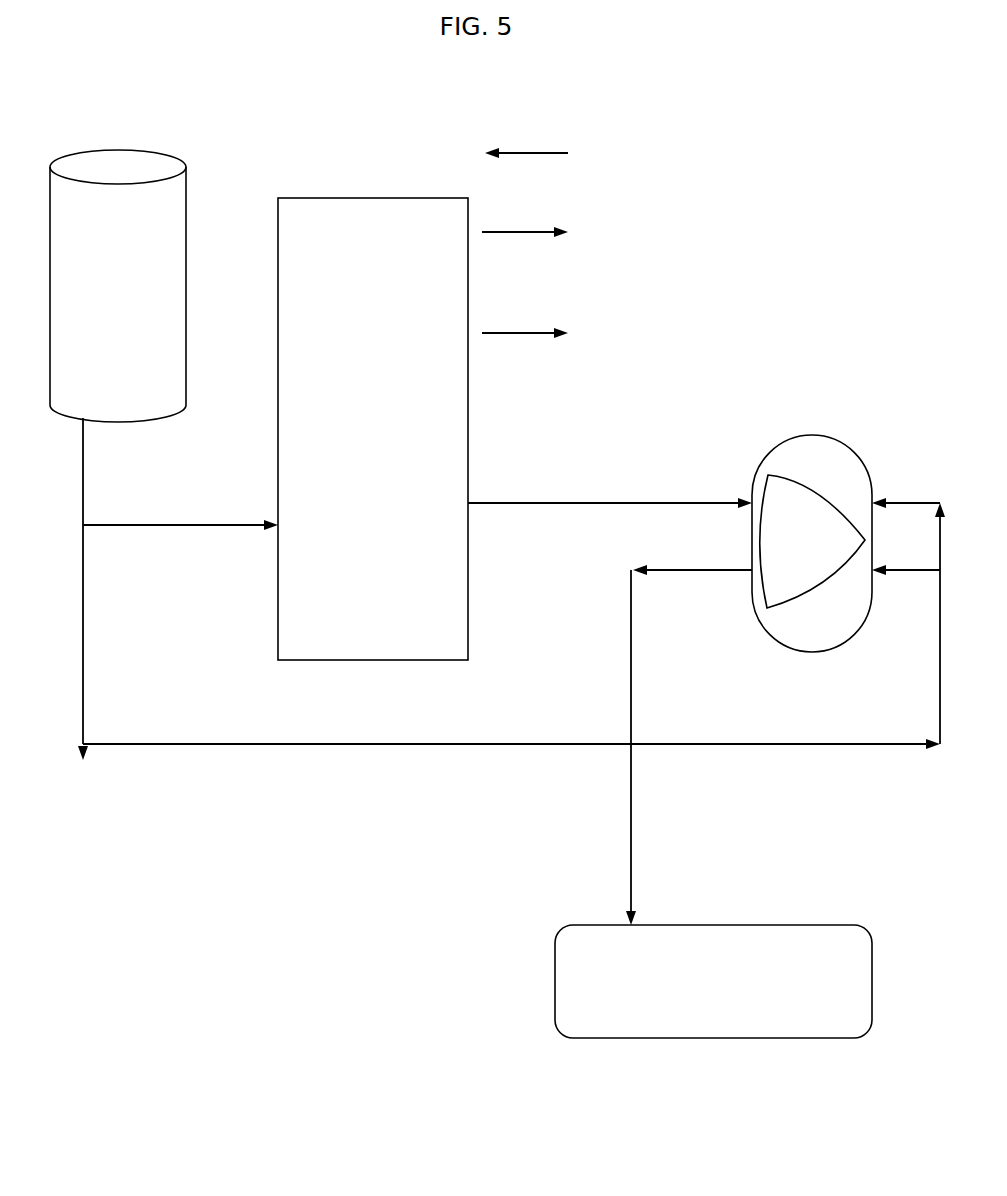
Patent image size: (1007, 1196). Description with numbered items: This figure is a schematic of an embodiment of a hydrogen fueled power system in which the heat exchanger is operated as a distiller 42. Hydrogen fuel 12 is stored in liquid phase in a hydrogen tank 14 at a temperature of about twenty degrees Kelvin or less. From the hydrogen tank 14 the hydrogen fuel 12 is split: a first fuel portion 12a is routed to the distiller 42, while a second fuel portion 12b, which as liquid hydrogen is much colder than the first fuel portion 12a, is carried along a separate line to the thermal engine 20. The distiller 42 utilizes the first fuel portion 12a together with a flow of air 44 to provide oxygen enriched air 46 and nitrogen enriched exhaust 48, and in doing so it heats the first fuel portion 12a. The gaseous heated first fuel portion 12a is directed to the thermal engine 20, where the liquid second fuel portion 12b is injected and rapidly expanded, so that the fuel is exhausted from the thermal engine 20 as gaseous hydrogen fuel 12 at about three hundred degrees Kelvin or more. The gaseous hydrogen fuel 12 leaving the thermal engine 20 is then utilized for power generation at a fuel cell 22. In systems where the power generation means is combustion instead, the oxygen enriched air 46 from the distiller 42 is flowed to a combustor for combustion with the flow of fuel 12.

The hydrogen tank 14 is at (82, 150).
The hydrogen fuel 12 is at (100, 298).
The first fuel portion 12a is at (135, 527).
The second fuel portion 12b is at (813, 745).
The distiller 42 is at (345, 492).
The flow of air 44 is at (533, 150).
The oxygen enriched air 46 is at (534, 233).
The nitrogen enriched exhaust 48 is at (526, 331).
The thermal engine 20 is at (811, 435).
The fuel cell 22 is at (696, 1001).